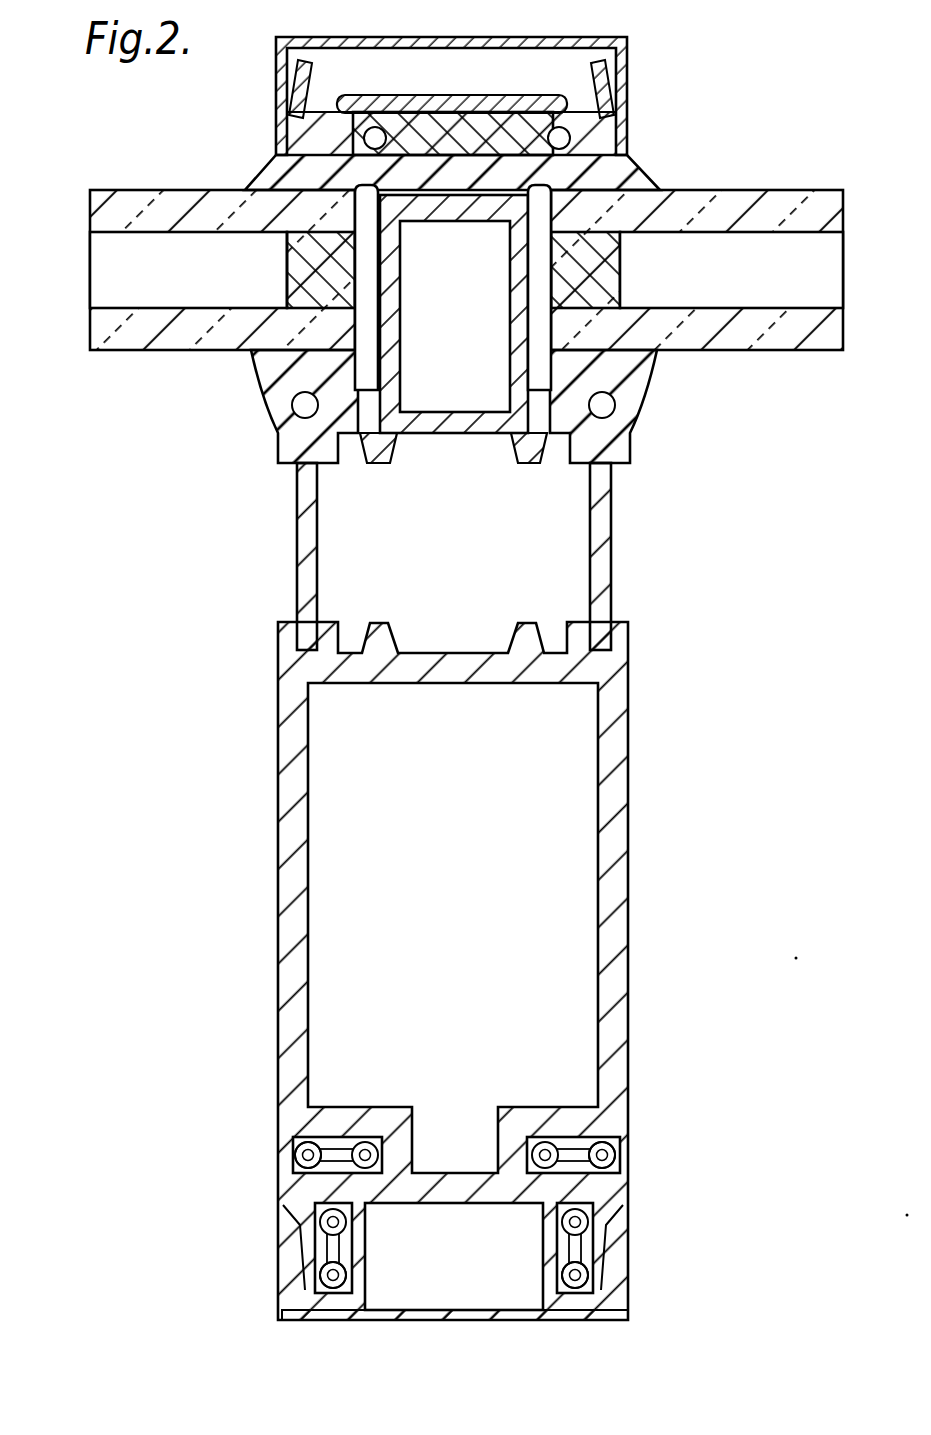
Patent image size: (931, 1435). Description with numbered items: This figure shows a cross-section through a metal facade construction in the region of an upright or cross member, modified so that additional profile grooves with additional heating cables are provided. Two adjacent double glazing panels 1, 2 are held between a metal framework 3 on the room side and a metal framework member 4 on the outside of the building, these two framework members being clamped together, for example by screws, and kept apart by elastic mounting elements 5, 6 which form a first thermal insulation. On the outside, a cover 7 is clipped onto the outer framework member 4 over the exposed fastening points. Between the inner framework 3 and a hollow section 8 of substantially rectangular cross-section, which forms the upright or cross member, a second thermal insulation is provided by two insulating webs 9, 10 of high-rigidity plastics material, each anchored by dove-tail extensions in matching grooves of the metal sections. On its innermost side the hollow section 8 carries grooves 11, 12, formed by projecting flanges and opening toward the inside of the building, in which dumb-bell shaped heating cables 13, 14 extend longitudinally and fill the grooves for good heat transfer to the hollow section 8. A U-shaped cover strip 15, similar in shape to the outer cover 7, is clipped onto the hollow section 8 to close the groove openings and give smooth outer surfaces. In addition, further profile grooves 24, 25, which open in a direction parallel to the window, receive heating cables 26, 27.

The double glazing panel 1 is at (723, 255).
The double glazing panel 2 is at (186, 255).
The metal framework 3 is at (462, 428).
The metal framework member 4 is at (525, 98).
The elastic mounting element 5 is at (625, 178).
The elastic mounting element 6 is at (262, 372).
The cover 7 is at (627, 82).
The hollow section 8 is at (292, 940).
The insulating web 9 is at (300, 545).
The insulating web 10 is at (612, 562).
The groove 11 is at (320, 1248).
The groove 12 is at (590, 1252).
The heating cable 13 is at (332, 1290).
The heating cable 14 is at (578, 1290).
The cover strip 15 is at (425, 1318).
The profile groove 24 is at (338, 1138).
The profile groove 25 is at (572, 1135).
The heating cable 26 is at (295, 1153).
The heating cable 27 is at (620, 1157).